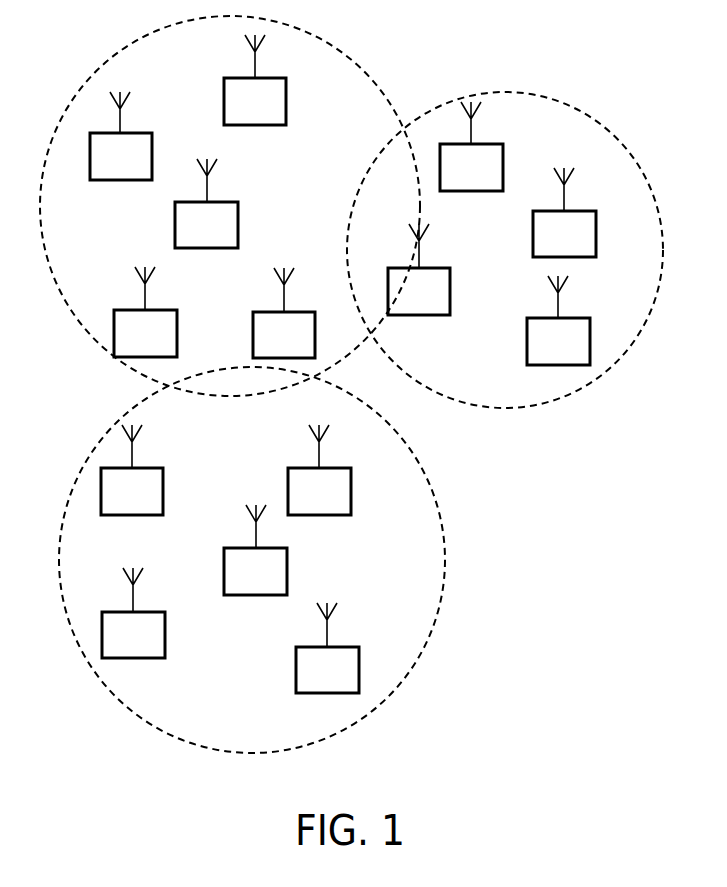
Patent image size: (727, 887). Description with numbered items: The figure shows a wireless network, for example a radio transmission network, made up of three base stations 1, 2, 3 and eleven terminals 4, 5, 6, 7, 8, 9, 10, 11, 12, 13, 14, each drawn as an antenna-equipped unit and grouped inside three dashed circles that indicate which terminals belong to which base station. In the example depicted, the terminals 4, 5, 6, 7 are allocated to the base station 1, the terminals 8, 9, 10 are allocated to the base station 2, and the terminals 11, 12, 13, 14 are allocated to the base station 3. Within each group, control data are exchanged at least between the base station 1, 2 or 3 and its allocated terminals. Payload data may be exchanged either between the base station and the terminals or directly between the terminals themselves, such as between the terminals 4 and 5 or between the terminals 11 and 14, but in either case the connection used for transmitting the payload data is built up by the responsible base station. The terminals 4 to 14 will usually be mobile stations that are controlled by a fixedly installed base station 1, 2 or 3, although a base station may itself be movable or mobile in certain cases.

The base station 1 is at (238, 210).
The base station 2 is at (596, 219).
The base station 3 is at (287, 556).
The terminal 4 is at (152, 141).
The terminal 5 is at (286, 86).
The terminal 6 is at (177, 318).
The terminal 7 is at (315, 320).
The terminal 8 is at (503, 152).
The terminal 9 is at (590, 326).
The terminal 10 is at (450, 276).
The terminal 11 is at (163, 476).
The terminal 12 is at (351, 476).
The terminal 13 is at (165, 620).
The terminal 14 is at (359, 655).